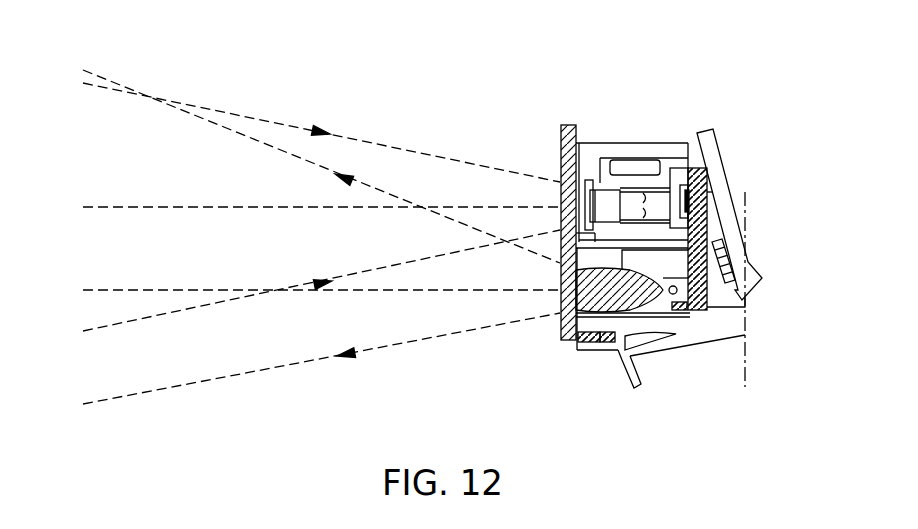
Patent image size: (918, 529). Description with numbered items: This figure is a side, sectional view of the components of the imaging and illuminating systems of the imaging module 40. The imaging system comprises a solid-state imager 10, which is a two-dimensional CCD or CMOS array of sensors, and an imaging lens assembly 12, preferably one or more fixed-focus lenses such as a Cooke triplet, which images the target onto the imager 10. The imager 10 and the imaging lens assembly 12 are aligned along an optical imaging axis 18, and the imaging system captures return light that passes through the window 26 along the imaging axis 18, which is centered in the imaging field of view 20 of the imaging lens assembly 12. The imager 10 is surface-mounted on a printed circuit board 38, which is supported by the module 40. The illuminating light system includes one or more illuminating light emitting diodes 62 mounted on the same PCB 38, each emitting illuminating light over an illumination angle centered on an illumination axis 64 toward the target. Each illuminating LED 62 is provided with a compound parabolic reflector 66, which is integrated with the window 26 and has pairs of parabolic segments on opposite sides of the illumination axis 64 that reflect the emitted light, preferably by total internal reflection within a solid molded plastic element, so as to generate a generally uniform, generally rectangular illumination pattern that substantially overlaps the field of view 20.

The solid-state imager 10 is at (687, 198).
The imaging lens assembly 12 is at (648, 195).
The optical imaging axis 18 is at (165, 207).
The imaging field of view 20 is at (163, 102).
The window 26 is at (563, 125).
The printed circuit board 38 is at (700, 307).
The imaging module 40 is at (703, 68).
The illuminating light emitting diode 62 is at (673, 307).
The illumination axis 64 is at (165, 290).
The compound parabolic reflector 66 is at (588, 297).